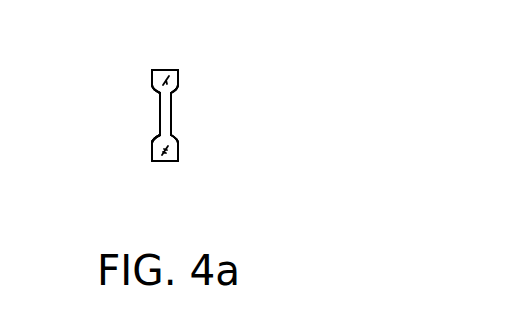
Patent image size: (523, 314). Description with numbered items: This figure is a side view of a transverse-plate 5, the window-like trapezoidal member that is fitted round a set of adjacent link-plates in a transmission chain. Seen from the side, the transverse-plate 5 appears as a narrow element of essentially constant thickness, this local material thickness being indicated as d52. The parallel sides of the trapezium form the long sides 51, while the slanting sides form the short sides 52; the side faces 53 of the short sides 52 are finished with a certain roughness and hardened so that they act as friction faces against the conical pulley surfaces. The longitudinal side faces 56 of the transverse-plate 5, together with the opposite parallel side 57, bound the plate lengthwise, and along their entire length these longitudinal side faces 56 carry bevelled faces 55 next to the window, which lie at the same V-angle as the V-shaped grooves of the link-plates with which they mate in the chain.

The transverse-plate 5 is at (150, 71).
The long sides 51 is at (174, 70).
The short sides 52 is at (172, 125).
The local material thickness d52 is at (137, 118).
The side faces 53 is at (173, 140).
The bevelled faces 55 is at (172, 97).
The longitudinal side faces 56 is at (150, 69).
The parallel side 57 is at (165, 70).